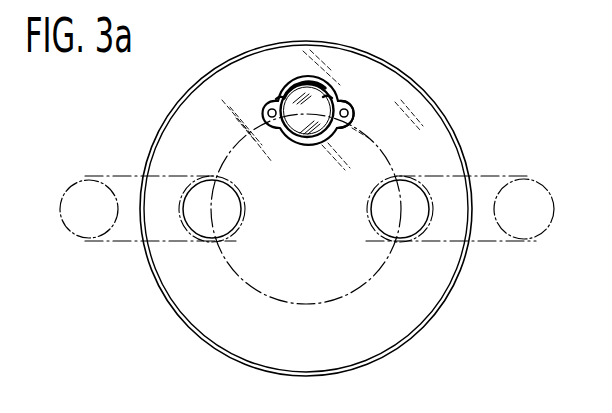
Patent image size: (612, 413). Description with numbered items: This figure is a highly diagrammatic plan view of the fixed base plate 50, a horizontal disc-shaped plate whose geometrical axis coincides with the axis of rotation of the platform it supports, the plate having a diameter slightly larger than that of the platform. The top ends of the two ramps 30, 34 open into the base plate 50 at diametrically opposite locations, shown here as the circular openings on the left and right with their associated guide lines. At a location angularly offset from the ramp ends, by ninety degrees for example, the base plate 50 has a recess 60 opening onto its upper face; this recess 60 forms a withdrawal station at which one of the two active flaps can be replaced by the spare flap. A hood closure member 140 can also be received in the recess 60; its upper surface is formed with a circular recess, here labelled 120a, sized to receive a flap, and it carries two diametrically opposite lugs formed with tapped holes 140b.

The ramp 30 is at (481, 241).
The ramp 34 is at (116, 243).
The base plate 50 is at (182, 289).
The recess 60 is at (268, 100).
The inner ring / bore 120a is at (331, 98).
The hood closure member 140 is at (356, 108).
The bolt hole 140b is at (263, 112).